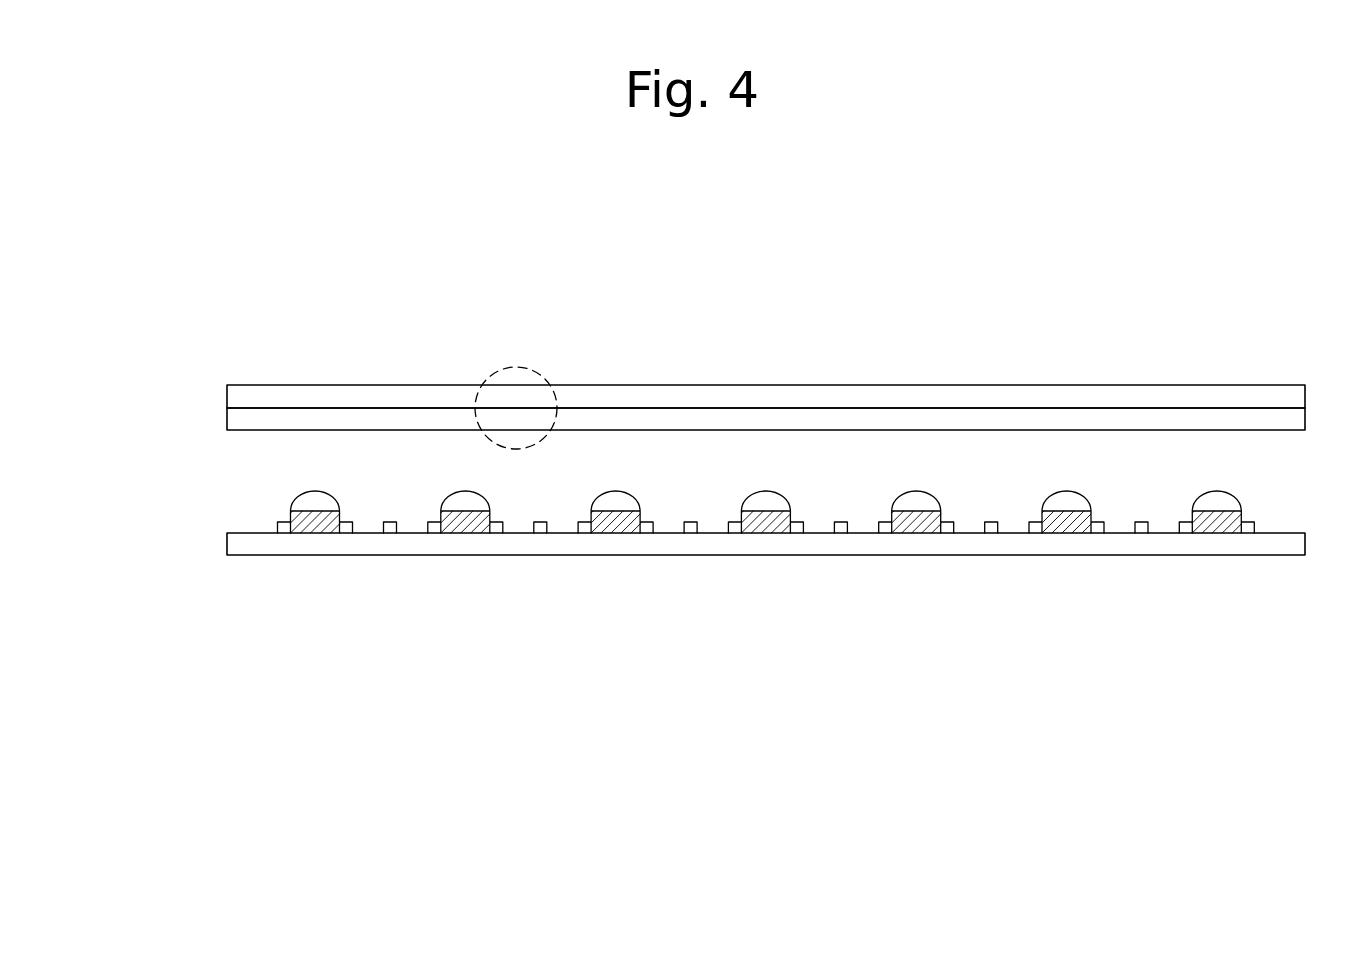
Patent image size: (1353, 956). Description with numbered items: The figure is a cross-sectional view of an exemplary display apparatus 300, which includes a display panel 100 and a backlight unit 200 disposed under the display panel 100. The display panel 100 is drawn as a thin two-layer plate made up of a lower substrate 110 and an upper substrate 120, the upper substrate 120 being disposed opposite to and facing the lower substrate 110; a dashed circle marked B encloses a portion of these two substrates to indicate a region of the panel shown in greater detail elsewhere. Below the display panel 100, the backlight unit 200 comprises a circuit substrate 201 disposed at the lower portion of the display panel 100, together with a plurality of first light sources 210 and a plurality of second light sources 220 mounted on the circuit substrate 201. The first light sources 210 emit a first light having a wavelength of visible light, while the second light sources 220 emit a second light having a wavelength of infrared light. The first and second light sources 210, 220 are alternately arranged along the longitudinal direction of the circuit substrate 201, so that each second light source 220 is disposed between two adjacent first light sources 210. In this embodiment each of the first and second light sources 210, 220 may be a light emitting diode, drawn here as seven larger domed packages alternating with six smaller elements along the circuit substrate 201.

The display panel 100 is at (692, 409).
The lower substrate 110 is at (235, 423).
The upper substrate 120 is at (235, 393).
The backlight unit 200 is at (719, 556).
The circuit substrate 201 is at (841, 548).
The first light source 210 is at (313, 531).
The second light source 220 is at (388, 533).
The display apparatus 300 is at (1171, 315).
The detail region B is at (534, 369).